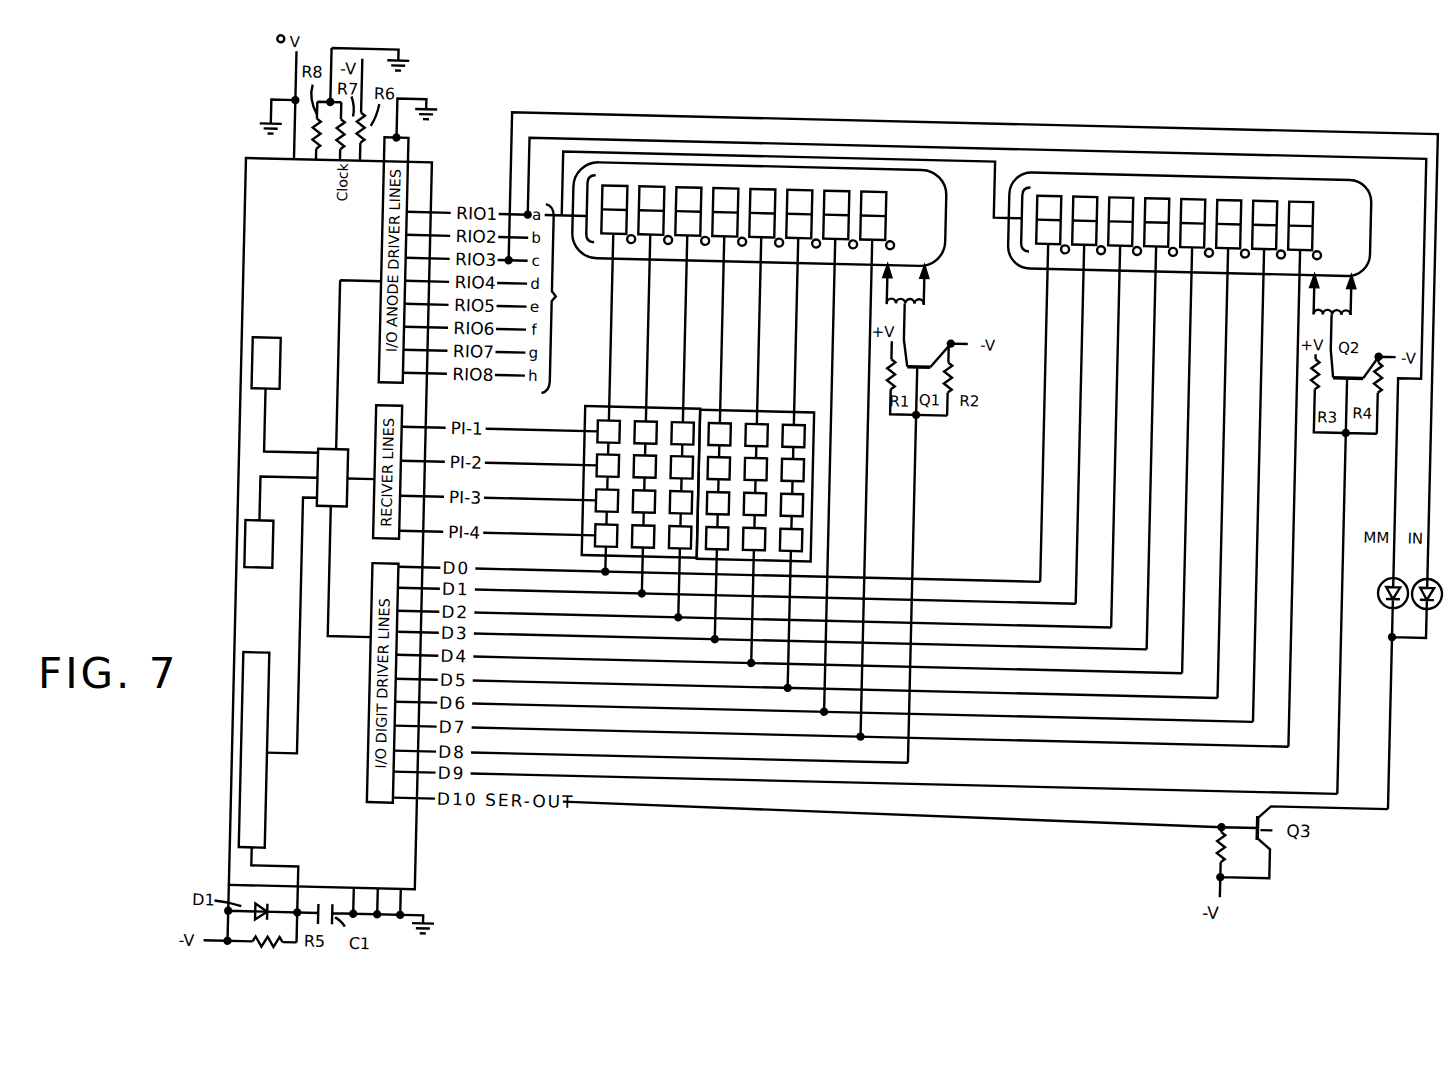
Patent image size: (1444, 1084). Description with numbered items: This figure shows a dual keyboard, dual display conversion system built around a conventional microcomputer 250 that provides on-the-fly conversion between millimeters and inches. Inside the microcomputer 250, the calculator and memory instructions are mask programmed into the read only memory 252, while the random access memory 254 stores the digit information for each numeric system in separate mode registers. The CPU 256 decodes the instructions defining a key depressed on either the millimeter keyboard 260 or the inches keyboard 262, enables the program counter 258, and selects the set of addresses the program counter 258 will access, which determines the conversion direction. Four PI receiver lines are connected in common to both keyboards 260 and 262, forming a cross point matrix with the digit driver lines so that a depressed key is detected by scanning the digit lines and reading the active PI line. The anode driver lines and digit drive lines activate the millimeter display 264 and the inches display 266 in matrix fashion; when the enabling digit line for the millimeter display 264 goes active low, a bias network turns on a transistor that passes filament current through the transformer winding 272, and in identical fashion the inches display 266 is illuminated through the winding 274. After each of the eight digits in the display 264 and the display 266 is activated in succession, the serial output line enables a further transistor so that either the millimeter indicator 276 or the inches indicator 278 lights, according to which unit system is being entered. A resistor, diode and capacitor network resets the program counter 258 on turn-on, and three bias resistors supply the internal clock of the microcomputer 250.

The microcomputer 250 is at (250, 247).
The read only memory (ROM) 252 is at (282, 526).
The random access memory (RAM) 254 is at (271, 343).
The CPU 256 is at (330, 453).
The program counter 258 is at (281, 658).
The millimeter (mm) keyboard 260 is at (611, 404).
The inches (in) keyboard 262 is at (820, 455).
The millimeter (mm) display 264 is at (938, 167).
The inches (in) display 266 is at (1008, 246).
The transformer winding 272 is at (930, 293).
The winding 274 is at (1356, 299).
The millimeter signal indicator 276 is at (1391, 562).
The inches signal indicator 278 is at (1440, 616).